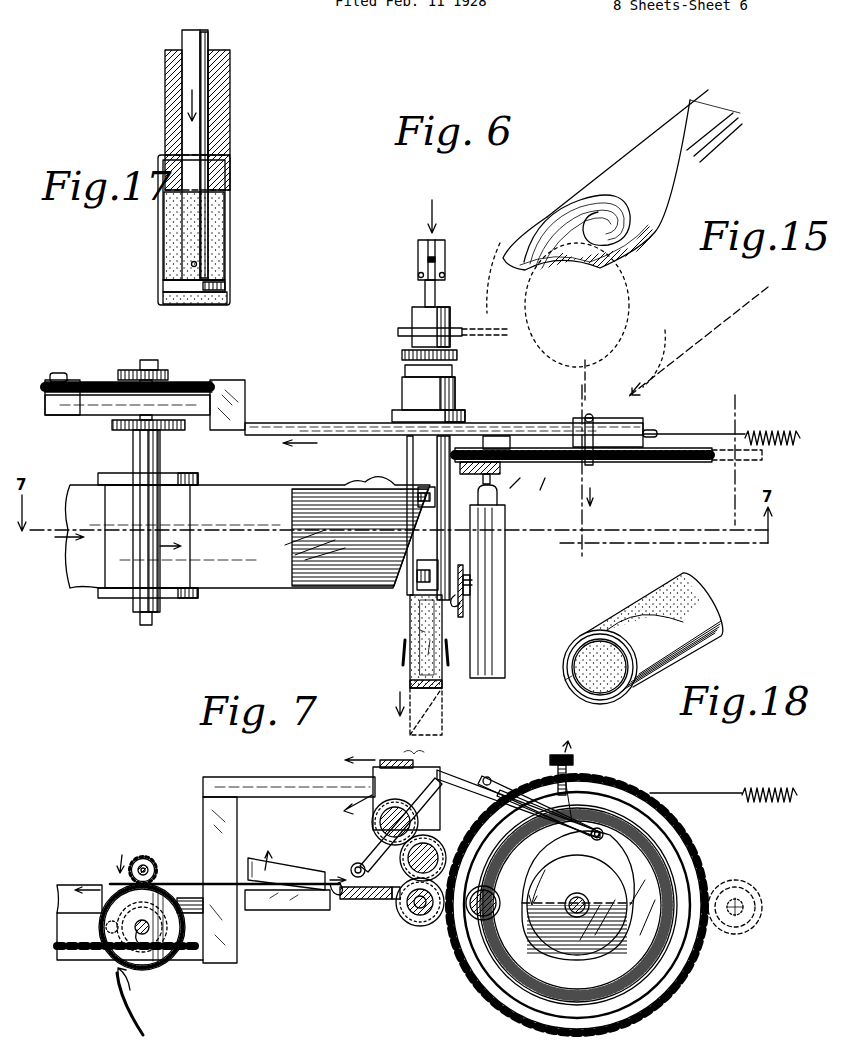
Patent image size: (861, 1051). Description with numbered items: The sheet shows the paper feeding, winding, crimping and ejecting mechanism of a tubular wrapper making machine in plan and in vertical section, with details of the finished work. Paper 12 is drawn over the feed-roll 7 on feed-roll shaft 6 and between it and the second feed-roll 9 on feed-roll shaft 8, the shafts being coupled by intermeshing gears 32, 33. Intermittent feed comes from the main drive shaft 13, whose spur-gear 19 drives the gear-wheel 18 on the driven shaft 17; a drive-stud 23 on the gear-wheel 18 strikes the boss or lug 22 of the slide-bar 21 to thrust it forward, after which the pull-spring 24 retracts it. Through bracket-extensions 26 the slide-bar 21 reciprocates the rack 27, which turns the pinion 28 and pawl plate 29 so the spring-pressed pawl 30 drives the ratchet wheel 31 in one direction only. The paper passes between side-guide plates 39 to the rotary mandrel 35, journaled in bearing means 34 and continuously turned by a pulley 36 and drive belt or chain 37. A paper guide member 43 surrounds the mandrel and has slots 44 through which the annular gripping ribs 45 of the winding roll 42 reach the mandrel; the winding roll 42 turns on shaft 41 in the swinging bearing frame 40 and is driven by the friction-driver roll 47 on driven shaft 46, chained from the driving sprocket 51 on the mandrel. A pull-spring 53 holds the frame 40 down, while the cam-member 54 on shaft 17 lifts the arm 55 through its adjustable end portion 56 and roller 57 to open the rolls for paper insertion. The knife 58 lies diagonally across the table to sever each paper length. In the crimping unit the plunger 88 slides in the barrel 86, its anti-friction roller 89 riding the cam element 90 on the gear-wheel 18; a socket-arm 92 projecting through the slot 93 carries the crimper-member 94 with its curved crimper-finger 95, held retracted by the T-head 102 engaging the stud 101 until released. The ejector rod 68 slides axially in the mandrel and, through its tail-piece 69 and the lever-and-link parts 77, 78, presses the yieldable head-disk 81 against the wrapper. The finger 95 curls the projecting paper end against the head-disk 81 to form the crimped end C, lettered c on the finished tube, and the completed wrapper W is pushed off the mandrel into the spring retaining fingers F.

In FIG. 6, the feed-roll shaft 6 is at (165, 395).
In FIG. 7, the feed-roll shaft 6 is at (140, 970).
In FIG. 6, the feed-roll 7 is at (105, 598).
In FIG. 7, the feed-roll 7 is at (172, 960).
In FIG. 6, the second feed-roll shaft 8 is at (146, 625).
In FIG. 7, the second feed-roll shaft 8 is at (157, 870).
In FIG. 6, the second feed-roll 9 is at (160, 470).
In FIG. 7, the second feed-roll 9 is at (149, 852).
In FIG. 6, the paper 12 is at (228, 583).
In FIG. 7, the paper 12 is at (345, 899).
In FIG. 7, the main drive shaft 13 is at (738, 905).
In FIG. 6, the driven shaft 17 is at (593, 420).
In FIG. 7, the driven shaft 17 is at (585, 897).
In FIG. 6, the gear-wheel 18 is at (660, 462).
In FIG. 7, the gear-wheel 18 is at (704, 838).
In FIG. 6, the spur-gear 19 is at (762, 458).
In FIG. 7, the spur-gear 19 is at (755, 915).
In FIG. 6, the slide-bar 21 is at (340, 423).
In FIG. 7, the slide-bar 21 is at (270, 777).
In FIG. 6, the boss or lug 22 is at (490, 436).
In FIG. 6, the drive-stud 23 is at (550, 428).
In FIG. 6, the pull-spring 24 is at (775, 430).
In FIG. 7, the pull-spring 24 is at (770, 785).
In FIG. 6, the bracket-extensions 26 is at (245, 400).
In FIG. 7, the bracket-extensions 26 is at (203, 818).
In FIG. 6, the rack 27 is at (60, 373).
In FIG. 7, the rack 27 is at (70, 918).
In FIG. 6, the gear or pinion 28 is at (175, 392).
In FIG. 7, the gear or pinion 28 is at (100, 965).
In FIG. 6, the pawl plate 29 is at (105, 380).
In FIG. 6, the spring-pressed pawl 30 is at (130, 370).
In FIG. 7, the spring-pressed pawl 30 is at (125, 915).
In FIG. 6, the ratchet wheel 31 is at (152, 384).
In FIG. 6, the gear 32 is at (120, 430).
In FIG. 6, the gear 33 is at (155, 425).
In FIG. 7, the gear 33 is at (129, 862).
In FIG. 6, the bearing means 34 is at (455, 388).
In FIG. 17, the rotary mandrel 35 is at (225, 110).
In FIG. 6, the rotary mandrel 35 is at (444, 318).
In FIG. 7, the rotary mandrel 35 is at (420, 915).
In FIG. 6, the pulley 36 is at (398, 331).
In FIG. 6, the drive belt or chain 37 is at (500, 327).
In FIG. 7, the side-guide plates 39 is at (335, 868).
In FIG. 7, the vertically swinging bearing frame 40 is at (373, 822).
In FIG. 7, the shaft 41 is at (423, 858).
In FIG. 7, the winding roll 42 is at (435, 840).
In FIG. 6, the paper guide member 43 is at (438, 565).
In FIG. 7, the paper guide member 43 is at (440, 915).
In FIG. 6, the slots or openings 44 is at (450, 488).
In FIG. 7, the slots or openings 44 is at (395, 899).
In FIG. 7, the annular gripping ribs 45 is at (403, 912).
In FIG. 7, the driven shaft 46 is at (400, 805).
In FIG. 7, the friction-driver roll 47 is at (470, 780).
In FIG. 6, the driving sprocket 51 is at (457, 355).
In FIG. 7, the pull-spring 53 is at (420, 758).
In FIG. 7, the cam-member 54 is at (612, 860).
In FIG. 7, the arm 55 is at (540, 775).
In FIG. 7, the adjustable free end portion 56 is at (560, 830).
In FIG. 7, the roller 57 is at (603, 834).
In FIG. 7, the cutting blade or knife 58 is at (280, 858).
In FIG. 17, the ejector rod 68 is at (208, 88).
In FIG. 6, the ejector rod 68 is at (420, 668).
In FIG. 7, the ejector rod 68 is at (424, 915).
In FIG. 6, the tail-piece 69 is at (435, 294).
In FIG. 6, the lever-and-link member 77 is at (432, 243).
In FIG. 6, the lever-and-link member 78 is at (445, 258).
In FIG. 17, the head-disk 81 is at (190, 285).
In FIG. 6, the head-disk 81 is at (430, 688).
In FIG. 6, the barrel 86 is at (497, 553).
In FIG. 7, the barrel 86 is at (490, 920).
In FIG. 6, the plunger 88 is at (497, 500).
In FIG. 7, the plunger 88 is at (497, 915).
In FIG. 6, the anti-friction roller 89 is at (483, 478).
In FIG. 6, the cam element 90 is at (551, 492).
In FIG. 6, the socket-arm 92 is at (463, 612).
In FIG. 6, the longitudinal slot or way 93 is at (465, 568).
In FIG. 6, the crimper-member 94 is at (405, 638).
In FIG. 6, the crimper-finger 95 is at (455, 652).
In FIG. 6, the stud 101 is at (470, 592).
In FIG. 6, the T-head or cross-bar 102 is at (472, 582).
In FIG. 17, the tubular wrapper W is at (230, 225).
In FIG. 6, the tubular wrapper W is at (415, 633).
In FIG. 15, the tubular wrapper W is at (690, 160).
In FIG. 18, the tubular wrapper W is at (695, 612).
In FIG. 17, the crimped end C is at (222, 298).
In FIG. 15, the crimped end C is at (625, 235).
In FIG. 6, the spring retaining fingers F is at (418, 657).
In FIG. 18, the cigarette c is at (563, 680).